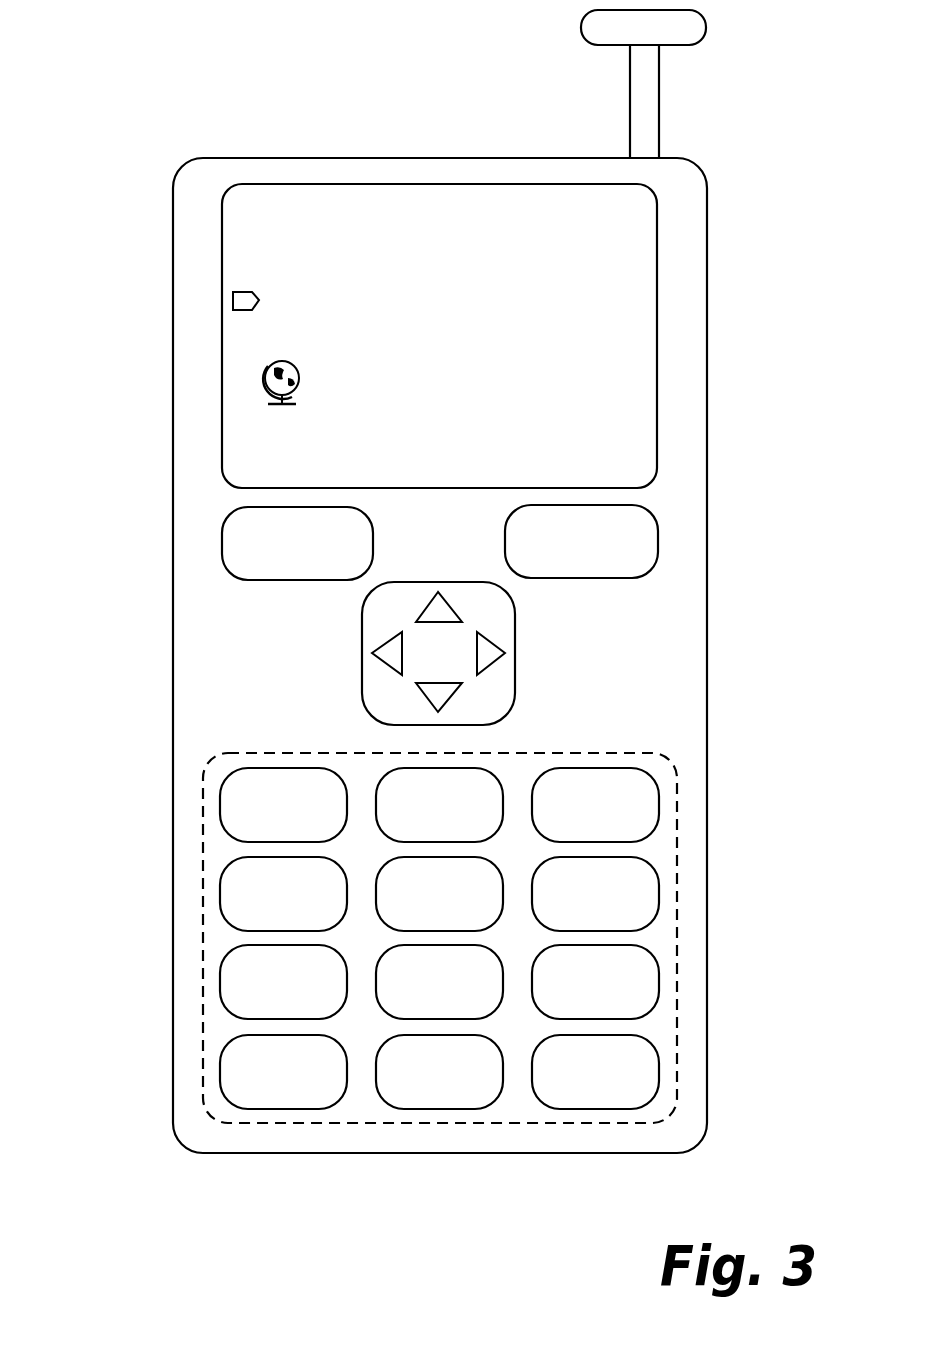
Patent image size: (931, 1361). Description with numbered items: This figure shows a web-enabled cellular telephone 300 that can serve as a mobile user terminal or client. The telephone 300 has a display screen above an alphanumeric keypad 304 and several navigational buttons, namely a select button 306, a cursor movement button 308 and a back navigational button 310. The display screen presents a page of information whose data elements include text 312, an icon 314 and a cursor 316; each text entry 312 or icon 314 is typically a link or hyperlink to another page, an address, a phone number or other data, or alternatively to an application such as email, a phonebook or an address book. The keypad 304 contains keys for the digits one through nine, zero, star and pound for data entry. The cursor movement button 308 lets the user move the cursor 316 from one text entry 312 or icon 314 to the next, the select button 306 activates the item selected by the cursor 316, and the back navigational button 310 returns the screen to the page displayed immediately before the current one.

The web-enabled cellular telephone 300 is at (436, 74).
The alphanumeric keypad 304 is at (206, 770).
The select button 306 is at (230, 528).
The cursor movement button 308 is at (373, 641).
The back navigational button 310 is at (640, 523).
The text 312 is at (266, 294).
The icon 314 is at (265, 370).
The cursor 316 is at (236, 296).